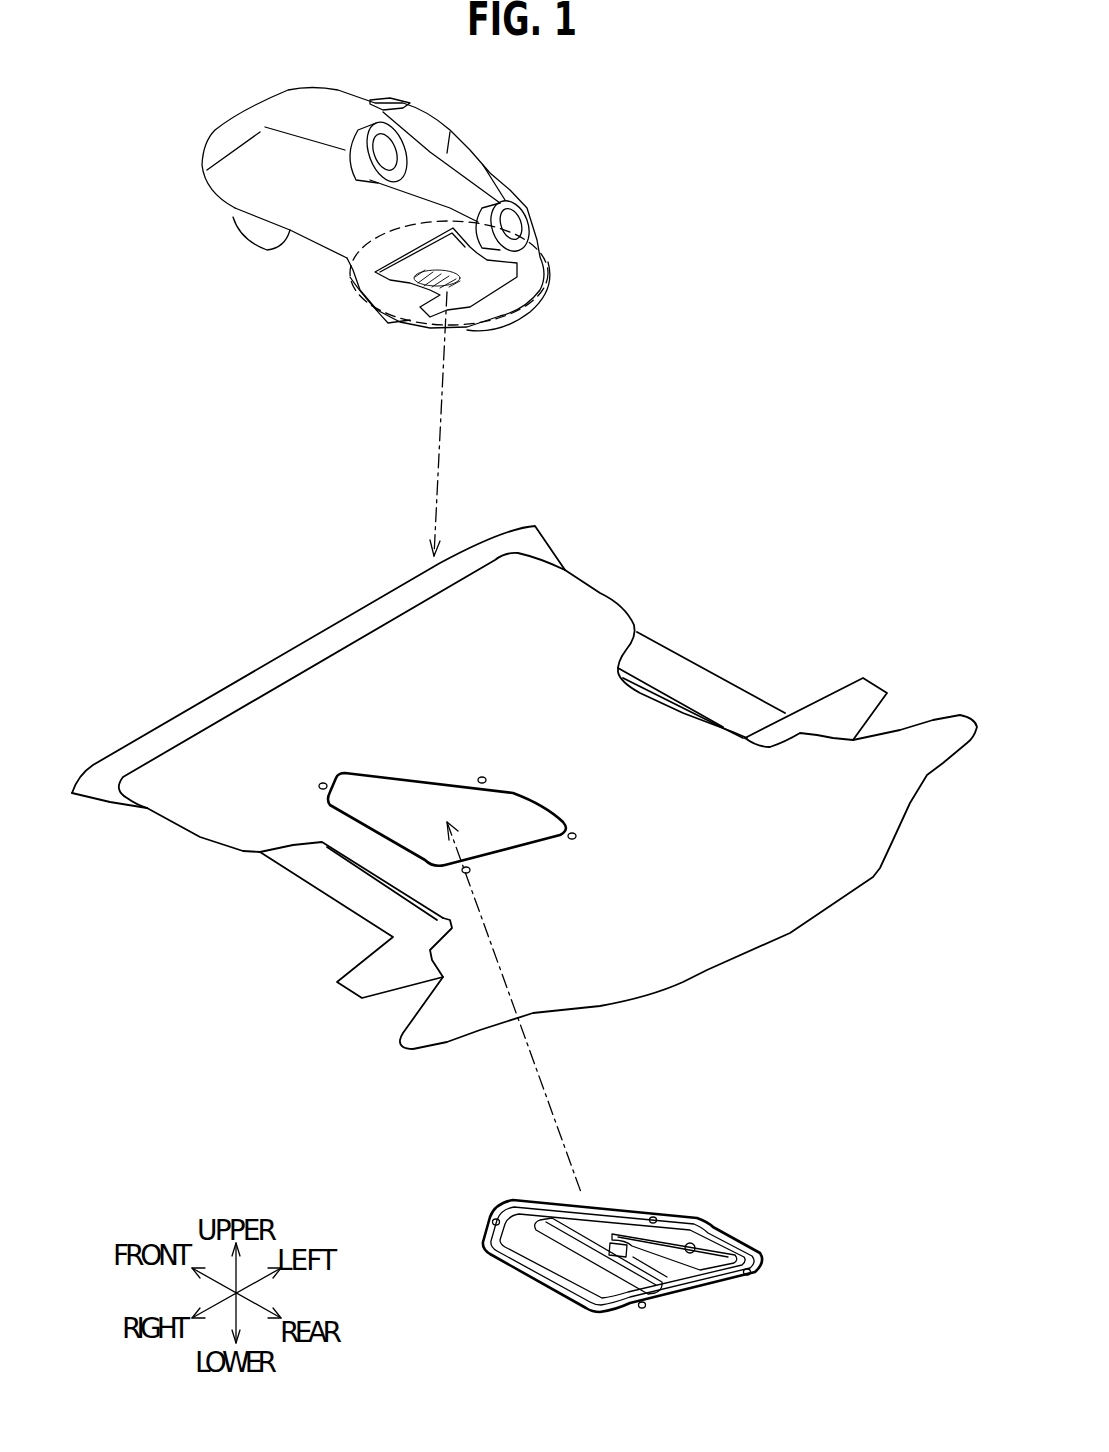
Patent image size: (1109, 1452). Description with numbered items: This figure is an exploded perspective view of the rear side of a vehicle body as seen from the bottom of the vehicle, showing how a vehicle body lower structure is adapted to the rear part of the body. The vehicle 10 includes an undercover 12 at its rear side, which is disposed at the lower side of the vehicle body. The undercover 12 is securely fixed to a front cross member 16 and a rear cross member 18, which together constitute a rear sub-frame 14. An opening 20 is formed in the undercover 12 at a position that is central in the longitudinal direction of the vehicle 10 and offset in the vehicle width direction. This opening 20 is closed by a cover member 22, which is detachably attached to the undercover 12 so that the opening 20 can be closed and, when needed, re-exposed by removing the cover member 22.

The vehicle 10 is at (518, 156).
The undercover 12 is at (484, 288).
The rear sub-frame 14 is at (290, 633).
The front cross member 16 is at (107, 790).
The rear cross member 18 is at (870, 695).
The opening 20 is at (498, 840).
The cover member 22 is at (540, 1298).